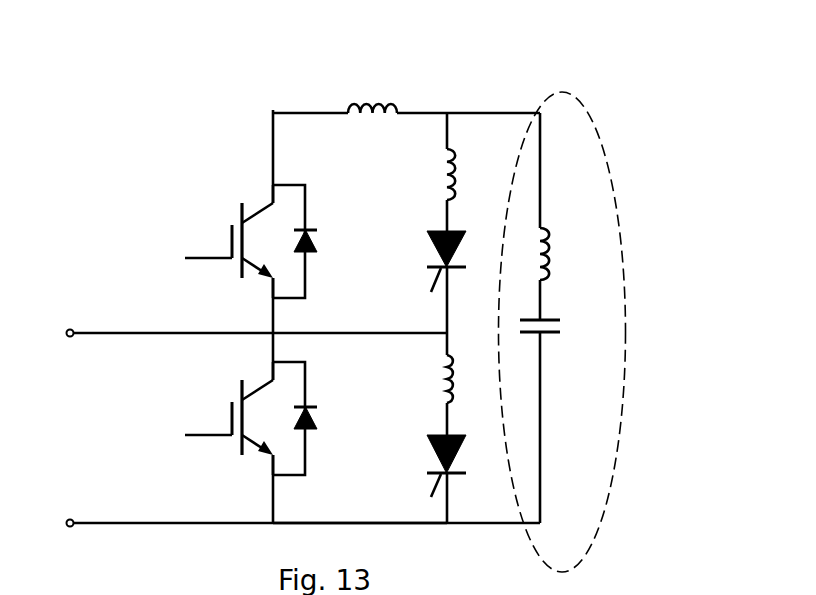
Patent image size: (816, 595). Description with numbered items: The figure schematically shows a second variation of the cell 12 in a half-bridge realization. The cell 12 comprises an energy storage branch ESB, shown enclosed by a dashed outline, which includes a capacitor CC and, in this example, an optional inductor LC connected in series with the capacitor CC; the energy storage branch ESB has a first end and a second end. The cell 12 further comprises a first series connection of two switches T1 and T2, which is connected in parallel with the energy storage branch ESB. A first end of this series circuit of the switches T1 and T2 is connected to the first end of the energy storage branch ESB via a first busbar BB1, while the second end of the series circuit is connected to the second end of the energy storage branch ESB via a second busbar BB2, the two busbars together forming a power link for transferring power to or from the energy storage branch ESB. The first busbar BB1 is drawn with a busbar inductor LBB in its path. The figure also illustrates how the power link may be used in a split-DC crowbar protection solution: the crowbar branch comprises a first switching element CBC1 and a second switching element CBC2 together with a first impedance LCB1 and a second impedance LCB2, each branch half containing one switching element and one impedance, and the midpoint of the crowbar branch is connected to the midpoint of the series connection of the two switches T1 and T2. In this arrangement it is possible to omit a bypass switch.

The cell 12 is at (660, 114).
The first busbar BB1 is at (297, 94).
The second busbar BB2 is at (360, 541).
The busbar inductor LBB is at (442, 90).
The first switch T1 is at (244, 241).
The second switch T2 is at (244, 418).
The first impedance LCB1 is at (411, 174).
The first switching element CBC1 is at (409, 261).
The second impedance LCB2 is at (407, 379).
The second switching element CBC2 is at (409, 466).
The inductor LC is at (575, 254).
The capacitor CC is at (566, 335).
The energy storage branch ESB is at (585, 332).